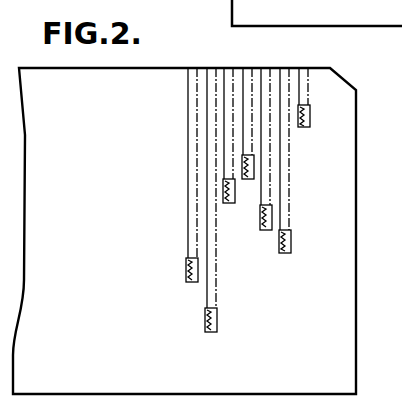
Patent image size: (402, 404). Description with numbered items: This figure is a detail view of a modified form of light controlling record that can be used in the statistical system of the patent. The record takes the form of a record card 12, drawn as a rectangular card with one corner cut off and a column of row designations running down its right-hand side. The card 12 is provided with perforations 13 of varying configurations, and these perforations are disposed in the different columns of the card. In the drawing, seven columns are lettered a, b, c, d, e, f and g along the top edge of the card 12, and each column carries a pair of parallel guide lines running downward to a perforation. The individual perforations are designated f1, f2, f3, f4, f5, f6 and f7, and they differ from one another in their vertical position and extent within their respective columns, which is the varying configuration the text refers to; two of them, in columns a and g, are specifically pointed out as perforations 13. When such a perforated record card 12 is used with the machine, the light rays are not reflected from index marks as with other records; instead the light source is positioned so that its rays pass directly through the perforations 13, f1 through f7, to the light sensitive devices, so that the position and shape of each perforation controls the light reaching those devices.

The record card 12 is at (352, 302).
The perforations 13 is at (187, 258).
The wire a is at (190, 82).
The wire b is at (210, 82).
The wire c is at (228, 82).
The wire d is at (247, 82).
The wire e is at (265, 82).
The wire f is at (283, 82).
The wire g is at (303, 82).
The fuse element f1 is at (186, 270).
The fuse element f2 is at (206, 326).
The fuse element f3 is at (226, 198).
The fuse element f4 is at (248, 178).
The fuse element f5 is at (262, 228).
The fuse element f6 is at (282, 252).
The fuse element f7 is at (302, 127).